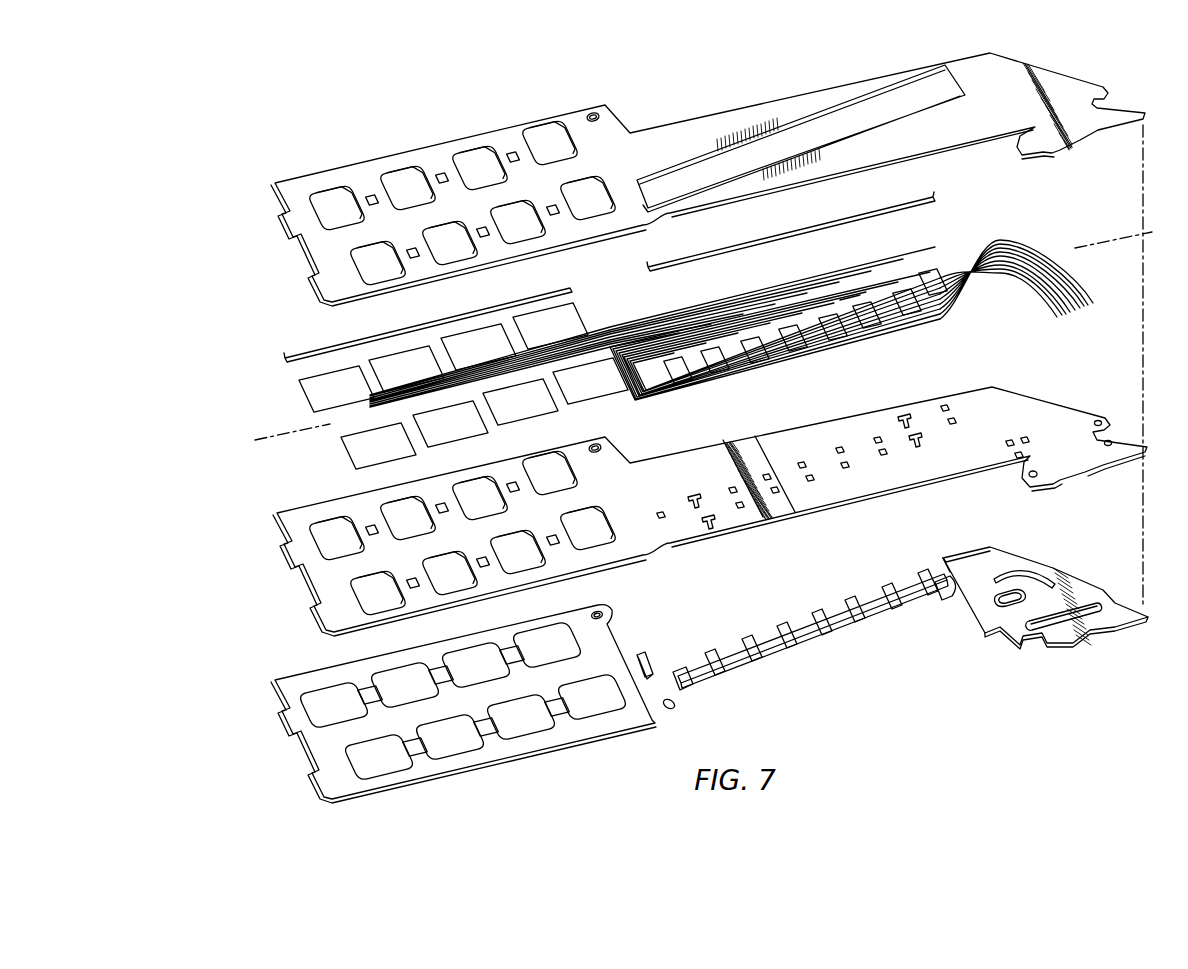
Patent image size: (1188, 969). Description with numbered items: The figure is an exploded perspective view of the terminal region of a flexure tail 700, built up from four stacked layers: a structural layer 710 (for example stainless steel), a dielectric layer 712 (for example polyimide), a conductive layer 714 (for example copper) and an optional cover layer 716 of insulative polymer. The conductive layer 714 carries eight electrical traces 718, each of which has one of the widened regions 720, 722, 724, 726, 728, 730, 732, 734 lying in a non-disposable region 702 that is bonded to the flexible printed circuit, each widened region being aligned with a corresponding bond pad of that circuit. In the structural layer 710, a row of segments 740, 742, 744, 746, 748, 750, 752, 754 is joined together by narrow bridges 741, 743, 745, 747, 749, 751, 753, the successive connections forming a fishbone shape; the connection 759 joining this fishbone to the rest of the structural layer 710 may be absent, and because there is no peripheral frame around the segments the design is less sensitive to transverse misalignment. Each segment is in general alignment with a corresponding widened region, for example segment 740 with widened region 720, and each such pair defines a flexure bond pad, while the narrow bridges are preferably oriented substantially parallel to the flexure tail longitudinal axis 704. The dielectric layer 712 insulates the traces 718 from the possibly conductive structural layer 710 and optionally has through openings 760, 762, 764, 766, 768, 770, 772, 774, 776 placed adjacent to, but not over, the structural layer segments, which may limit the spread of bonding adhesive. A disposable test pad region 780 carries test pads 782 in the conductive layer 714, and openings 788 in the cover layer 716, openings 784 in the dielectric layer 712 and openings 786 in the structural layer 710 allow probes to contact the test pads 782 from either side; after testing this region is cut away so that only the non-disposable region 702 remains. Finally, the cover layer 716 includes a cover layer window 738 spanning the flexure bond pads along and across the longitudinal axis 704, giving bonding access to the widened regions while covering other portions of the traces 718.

The flexure tail 700 is at (210, 126).
The non-disposable region 702 is at (793, 228).
The flexure tail longitudinal axis 704 is at (1122, 243).
The structural layer 710 is at (1044, 587).
The dielectric layer 712 is at (1082, 397).
The conductive layer 714 is at (738, 318).
The cover layer 716 is at (1132, 100).
The electrical traces 718 is at (1098, 302).
The widened region 720 is at (682, 385).
The widened region 722 is at (720, 374).
The widened region 724 is at (758, 364).
The widened region 726 is at (798, 352).
The widened region 728 is at (855, 302).
The widened region 730 is at (850, 300).
The widened region 732 is at (893, 290).
The widened region 734 is at (932, 268).
The cover layer window 738 is at (820, 135).
The segment 740 is at (672, 710).
The narrow bridge 741 is at (682, 662).
The segment 742 is at (714, 681).
The narrow bridge 743 is at (738, 652).
The segment 744 is at (758, 668).
The narrow bridge 745 is at (772, 640).
The segment 746 is at (790, 656).
The narrow bridge 747 is at (806, 625).
The segment 748 is at (834, 650).
The narrow bridge 749 is at (844, 612).
The segment 750 is at (874, 633).
The narrow bridge 751 is at (886, 598).
The segment 752 is at (910, 612).
The narrow bridge 753 is at (920, 582).
The segment 754 is at (970, 592).
The connection 759 is at (944, 560).
The through opening 760 is at (661, 511).
The through opening 762 is at (707, 514).
The through opening 764 is at (746, 508).
The through opening 766 is at (780, 494).
The through opening 768 is at (816, 478).
The through opening 770 is at (843, 446).
The through opening 772 is at (888, 452).
The through opening 774 is at (922, 438).
The through opening 776 is at (957, 412).
The disposable test pad region 780 is at (442, 316).
The test pads 782 is at (320, 400).
The openings 784 is at (334, 538).
The openings 786 is at (330, 700).
The openings 788 is at (344, 200).